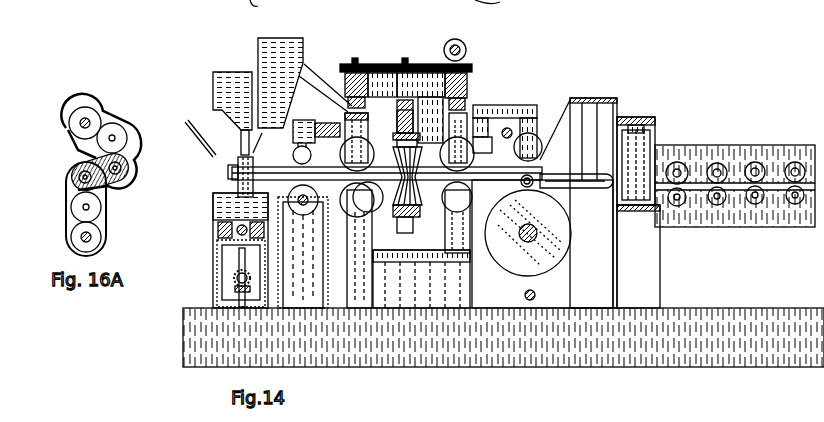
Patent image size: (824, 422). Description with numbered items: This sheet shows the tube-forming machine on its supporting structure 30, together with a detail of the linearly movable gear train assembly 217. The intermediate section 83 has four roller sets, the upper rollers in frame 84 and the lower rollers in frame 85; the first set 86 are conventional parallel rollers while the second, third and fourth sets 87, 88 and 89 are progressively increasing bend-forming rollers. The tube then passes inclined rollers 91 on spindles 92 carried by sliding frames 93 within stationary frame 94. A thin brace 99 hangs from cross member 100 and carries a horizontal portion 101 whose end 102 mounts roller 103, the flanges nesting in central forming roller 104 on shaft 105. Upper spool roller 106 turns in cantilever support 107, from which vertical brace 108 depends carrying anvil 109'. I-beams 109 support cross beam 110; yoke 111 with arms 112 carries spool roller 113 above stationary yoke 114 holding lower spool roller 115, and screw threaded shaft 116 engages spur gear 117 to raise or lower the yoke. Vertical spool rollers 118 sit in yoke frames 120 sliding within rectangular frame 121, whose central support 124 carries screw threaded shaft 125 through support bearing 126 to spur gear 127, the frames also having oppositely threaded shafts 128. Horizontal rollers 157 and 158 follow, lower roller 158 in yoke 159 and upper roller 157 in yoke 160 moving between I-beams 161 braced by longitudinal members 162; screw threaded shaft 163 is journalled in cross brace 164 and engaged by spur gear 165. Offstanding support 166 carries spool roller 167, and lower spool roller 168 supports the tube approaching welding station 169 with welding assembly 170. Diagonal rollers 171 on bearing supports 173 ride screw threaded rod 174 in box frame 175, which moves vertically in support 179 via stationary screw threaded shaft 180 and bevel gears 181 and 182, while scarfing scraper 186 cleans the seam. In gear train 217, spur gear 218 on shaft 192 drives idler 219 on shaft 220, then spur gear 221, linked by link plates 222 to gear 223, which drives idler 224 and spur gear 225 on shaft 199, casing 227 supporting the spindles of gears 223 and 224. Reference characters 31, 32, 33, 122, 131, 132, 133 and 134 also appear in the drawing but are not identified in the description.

In FIG. 14, the supporting structure 30 is at (700, 312).
In FIG. 14, the guide roller 31 is at (728, 0).
In FIG. 14, the guide roller 32 is at (692, 0).
In FIG. 14, the guide roller 33 is at (662, 0).
In FIG. 14, the intermediate section 83 is at (780, 148).
In FIG. 14, the frame 84 is at (812, 210).
In FIG. 14, the frame 85 is at (700, 227).
In FIG. 14, the first set of rollers 86 is at (790, 204).
In FIG. 14, the second set of rollers 87 is at (786, 165).
In FIG. 14, the third set of rollers 88 is at (748, 165).
In FIG. 14, the fourth set of rollers 89 is at (712, 165).
In FIG. 14, the inclined rollers 91 is at (680, 163).
In FIG. 14, the shafts or spindles 92 is at (645, 128).
In FIG. 14, the sliding frames 93 is at (638, 256).
In FIG. 14, the stationary frame 94 is at (636, 127).
In FIG. 14, the brace 99 is at (582, 130).
In FIG. 14, the cross member 100 is at (588, 98).
In FIG. 14, the horizontally located portion 101 is at (542, 244).
In FIG. 14, the end 102 is at (553, 176).
In FIG. 14, the roller 103 is at (521, 177).
In FIG. 14, the forming roller 104 is at (570, 250).
In FIG. 14, the shaft 105 is at (563, 231).
In FIG. 14, the upper spool type roller 106 is at (535, 118).
In FIG. 14, the cantilever support 107 is at (470, 85).
In FIG. 14, the vertical brace 108 is at (480, 160).
In FIG. 14, the I-beams 109 is at (493, 51).
In FIG. 14, the anvil 109' is at (219, 244).
In FIG. 14, the cross beam 110 is at (468, 90).
In FIG. 14, the yoke 111 is at (428, 122).
In FIG. 14, the arms 112 is at (442, 162).
In FIG. 14, the spool type roller 113 is at (488, 168).
In FIG. 14, the stationary yoke 114 is at (413, 221).
In FIG. 14, the lower spool roller 115 is at (416, 228).
In FIG. 14, the screw threaded shaft 116 is at (475, 108).
In FIG. 14, the screw threaded spur gear 117 is at (467, 48).
In FIG. 14, the spool type rollers 118 is at (395, 202).
In FIG. 14, the yoke frames 120 is at (417, 141).
In FIG. 14, the rectangular frame 121 is at (398, 140).
In FIG. 14, the block 122 is at (400, 230).
In FIG. 14, the central support 124 is at (413, 126).
In FIG. 14, the screw threaded shaft 125 is at (405, 62).
In FIG. 14, the support bearing 126 is at (410, 85).
In FIG. 14, the screw threaded spur gear 127 is at (380, 80).
In FIG. 14, the oppositely screw threaded shafts 128 is at (400, 115).
In FIG. 14, the guide 131 is at (622, 0).
In FIG. 14, the guide 132 is at (585, 0).
In FIG. 14, the guide 133 is at (543, 0).
In FIG. 14, the guide 134 is at (503, 0).
In FIG. 14, the upper roller 157 is at (346, 158).
In FIG. 14, the lower roller 158 is at (355, 205).
In FIG. 14, the yoke 159 is at (303, 252).
In FIG. 14, the yoke 160 is at (352, 128).
In FIG. 14, the I-beams 161 is at (348, 90).
In FIG. 14, the longitudinal members 162 is at (356, 73).
In FIG. 14, the screw threaded shaft 163 is at (335, 98).
In FIG. 14, the cross brace 164 is at (350, 100).
In FIG. 14, the spur gear 165 is at (342, 62).
In FIG. 14, the offstanding support 166 is at (303, 121).
In FIG. 14, the spool roller 167 is at (255, 165).
In FIG. 14, the lower spool roller 168 is at (299, 198).
In FIG. 14, the welding station 169 is at (262, 50).
In FIG. 14, the welding assembly 170 is at (277, 47).
In FIG. 14, the diagonally situated rollers 171 is at (213, 205).
In FIG. 14, the bearing supports 173 is at (220, 228).
In FIG. 14, the screw threaded rod 174 is at (218, 243).
In FIG. 14, the box frame 175 is at (233, 315).
In FIG. 14, the support 179 is at (215, 308).
In FIG. 14, the stationary screw threaded shaft 180 is at (268, 315).
In FIG. 14, the bevel gear 181 is at (233, 278).
In FIG. 14, the bevel gear 182 is at (240, 268).
In FIG. 14, the scarfing scraper 186 is at (197, 122).
In FIG. 16A, the shaft 192 is at (72, 238).
In FIG. 16A, the shaft 199 is at (86, 110).
In FIG. 16A, the gear train assembly 217 is at (112, 110).
In FIG. 16A, the spur gear 218 is at (100, 237).
In FIG. 16A, the idler 219 is at (100, 207).
In FIG. 16A, the shaft 220 is at (72, 208).
In FIG. 16A, the spur gear 221 is at (75, 162).
In FIG. 16A, the link plates 222 is at (70, 133).
In FIG. 16A, the gear 223 is at (130, 168).
In FIG. 16A, the idler 224 is at (126, 139).
In FIG. 16A, the spur gear 225 is at (80, 118).
In FIG. 16A, the casing 227 is at (128, 128).